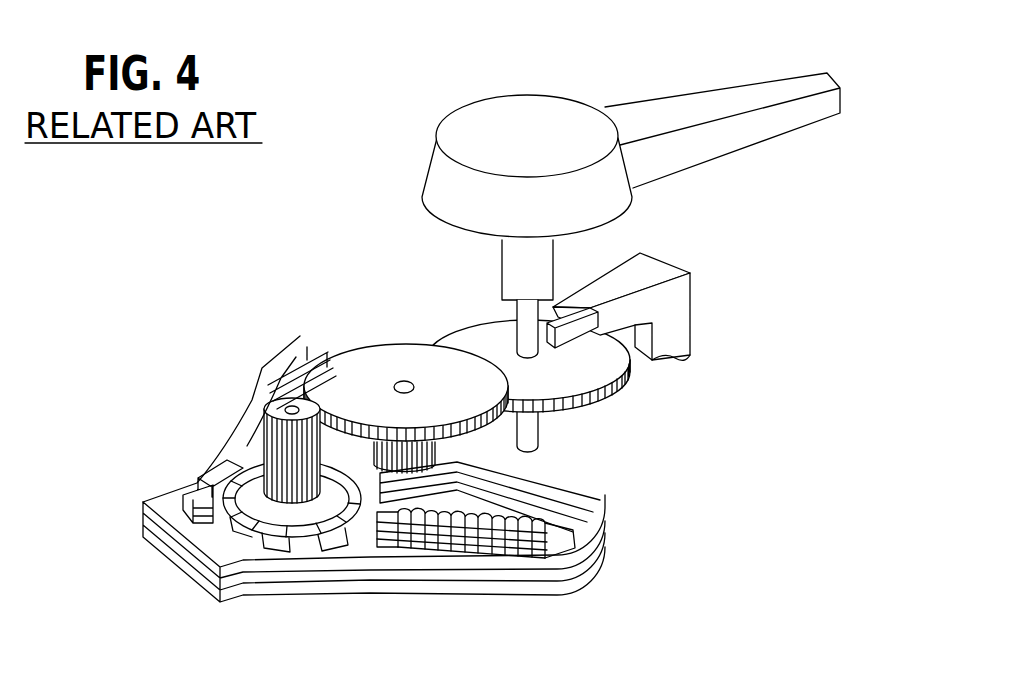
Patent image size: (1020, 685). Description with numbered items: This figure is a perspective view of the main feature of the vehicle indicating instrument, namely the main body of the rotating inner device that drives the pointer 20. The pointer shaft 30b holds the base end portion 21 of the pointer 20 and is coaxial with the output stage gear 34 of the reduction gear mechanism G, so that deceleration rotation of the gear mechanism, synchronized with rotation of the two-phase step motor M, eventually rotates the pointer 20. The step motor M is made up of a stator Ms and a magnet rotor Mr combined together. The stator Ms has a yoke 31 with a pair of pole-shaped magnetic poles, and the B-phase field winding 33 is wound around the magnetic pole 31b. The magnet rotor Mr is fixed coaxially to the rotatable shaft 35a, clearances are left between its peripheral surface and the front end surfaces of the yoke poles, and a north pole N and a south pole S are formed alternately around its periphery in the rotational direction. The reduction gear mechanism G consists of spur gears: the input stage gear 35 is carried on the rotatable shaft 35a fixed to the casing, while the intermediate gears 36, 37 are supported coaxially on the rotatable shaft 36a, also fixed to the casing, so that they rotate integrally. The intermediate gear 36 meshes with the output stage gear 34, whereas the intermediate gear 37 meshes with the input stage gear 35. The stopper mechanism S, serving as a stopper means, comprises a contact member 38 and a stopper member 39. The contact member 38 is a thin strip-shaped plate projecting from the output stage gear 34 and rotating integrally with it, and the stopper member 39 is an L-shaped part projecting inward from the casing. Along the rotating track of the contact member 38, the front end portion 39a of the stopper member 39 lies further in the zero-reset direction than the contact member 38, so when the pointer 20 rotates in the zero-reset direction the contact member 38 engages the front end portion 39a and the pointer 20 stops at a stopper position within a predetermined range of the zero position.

The pointer 20 is at (790, 68).
The base end portion 21 is at (525, 127).
The pointer shaft 30b is at (517, 327).
The output stage gear 34 is at (463, 337).
The rotatable shaft 36a is at (403, 381).
The intermediate gear 36 is at (500, 452).
The intermediate gear 37 is at (348, 377).
The contact member 38 is at (600, 337).
The stopper member 39 is at (693, 335).
The front end portion 39a is at (583, 298).
The yoke 31 is at (350, 593).
The magnetic pole 31b is at (557, 530).
The B-phase field winding 33 is at (433, 553).
The input stage gear 35 is at (287, 438).
The rotatable shaft 35a is at (289, 402).
The two-phase step motor M is at (213, 353).
The magnet rotor Mr is at (241, 477).
The stator Ms is at (622, 558).
The reduction gear mechanism G is at (624, 405).
The stopper mechanism S is at (707, 309).
The north pole N is at (277, 542).